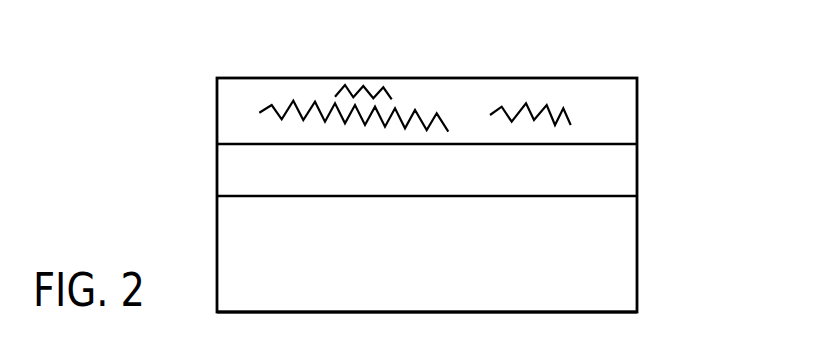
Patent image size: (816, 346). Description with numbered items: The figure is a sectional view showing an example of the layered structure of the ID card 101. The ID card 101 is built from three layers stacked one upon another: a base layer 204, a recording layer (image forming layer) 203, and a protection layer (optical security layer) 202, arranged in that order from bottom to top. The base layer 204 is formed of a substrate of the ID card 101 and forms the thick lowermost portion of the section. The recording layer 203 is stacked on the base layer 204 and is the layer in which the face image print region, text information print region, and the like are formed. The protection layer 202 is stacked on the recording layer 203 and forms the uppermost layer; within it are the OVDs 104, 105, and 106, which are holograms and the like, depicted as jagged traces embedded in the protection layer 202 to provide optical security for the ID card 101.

The ID card 101 is at (601, 78).
The OVD 104 is at (275, 106).
The OVD 105 is at (360, 83).
The OVD 106 is at (517, 106).
The protection layer 202 is at (632, 117).
The recording layer 203 is at (632, 171).
The base layer 204 is at (632, 266).